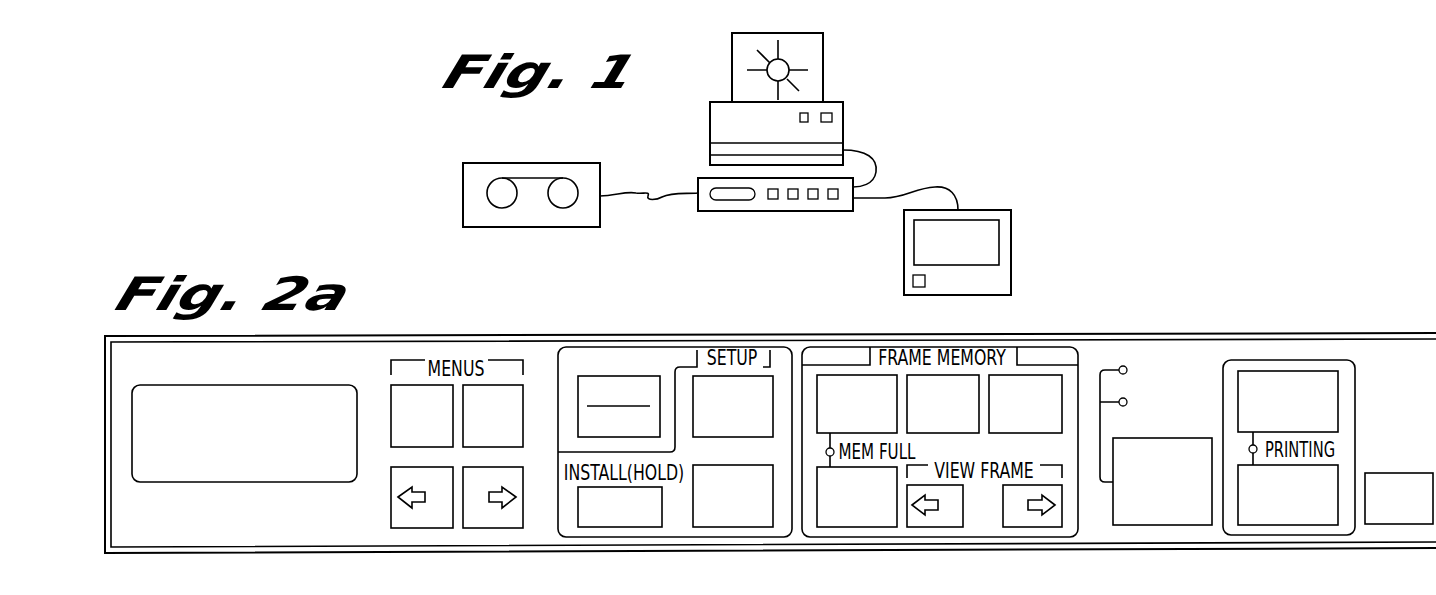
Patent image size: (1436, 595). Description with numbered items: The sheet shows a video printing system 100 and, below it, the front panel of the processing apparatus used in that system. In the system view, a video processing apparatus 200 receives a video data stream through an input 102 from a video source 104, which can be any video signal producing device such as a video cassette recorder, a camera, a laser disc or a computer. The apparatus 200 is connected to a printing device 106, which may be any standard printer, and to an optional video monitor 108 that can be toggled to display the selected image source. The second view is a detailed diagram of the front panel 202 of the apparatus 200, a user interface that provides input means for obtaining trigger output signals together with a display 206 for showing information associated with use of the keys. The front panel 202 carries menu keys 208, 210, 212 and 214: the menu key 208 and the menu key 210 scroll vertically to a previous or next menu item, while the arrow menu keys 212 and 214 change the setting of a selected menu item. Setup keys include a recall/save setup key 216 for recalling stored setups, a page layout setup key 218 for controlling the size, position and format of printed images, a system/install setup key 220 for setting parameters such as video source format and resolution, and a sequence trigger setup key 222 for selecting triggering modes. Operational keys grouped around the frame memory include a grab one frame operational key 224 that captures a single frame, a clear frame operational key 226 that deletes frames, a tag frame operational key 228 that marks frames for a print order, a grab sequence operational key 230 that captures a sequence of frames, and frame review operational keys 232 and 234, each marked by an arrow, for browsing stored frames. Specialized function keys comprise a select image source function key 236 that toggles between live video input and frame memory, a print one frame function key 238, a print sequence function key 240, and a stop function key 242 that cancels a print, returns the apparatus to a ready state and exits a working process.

In FIG. 1, the system 100 is at (913, 133).
In FIG. 1, the input 102 is at (652, 191).
In FIG. 1, the video source 104 is at (528, 163).
In FIG. 1, the printing device 106 is at (836, 102).
In FIG. 1, the video monitor 108 is at (1011, 243).
In FIG. 1, the video processing apparatus 200 is at (775, 211).
In FIG. 2A, the video processing apparatus 200 is at (1367, 333).
In FIG. 2A, the front panel 202 is at (547, 398).
In FIG. 2A, the display 206 is at (270, 398).
In FIG. 2A, the menu key 208 is at (391, 400).
In FIG. 2A, the menu key 210 is at (520, 400).
In FIG. 2A, the arrow menu key 212 is at (391, 497).
In FIG. 2A, the arrow menu key 214 is at (493, 522).
In FIG. 2A, the recall/save setup key 216 is at (638, 376).
In FIG. 2A, the page layout setup key 218 is at (764, 376).
In FIG. 2A, the system/install setup key 220 is at (617, 527).
In FIG. 2A, the sequence trigger setup key 222 is at (732, 527).
In FIG. 2A, the grab one frame operational key 224 is at (829, 375).
In FIG. 2A, the clear frame operational key 226 is at (950, 433).
In FIG. 2A, the tag frame operational key 228 is at (1038, 375).
In FIG. 2A, the grab sequence operational key 230 is at (857, 527).
In FIG. 2A, the frame review operational key 232 is at (935, 520).
In FIG. 2A, the frame review operational key 234 is at (1033, 520).
In FIG. 2A, the select image source function key 236 is at (1163, 525).
In FIG. 2A, the print one frame function key 238 is at (1280, 371).
In FIG. 2A, the print sequence function key 240 is at (1285, 525).
In FIG. 2A, the stop function key 242 is at (1400, 524).